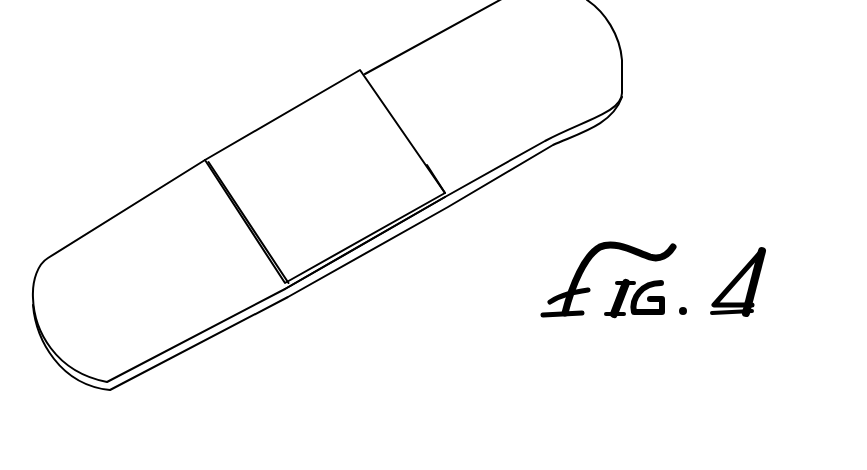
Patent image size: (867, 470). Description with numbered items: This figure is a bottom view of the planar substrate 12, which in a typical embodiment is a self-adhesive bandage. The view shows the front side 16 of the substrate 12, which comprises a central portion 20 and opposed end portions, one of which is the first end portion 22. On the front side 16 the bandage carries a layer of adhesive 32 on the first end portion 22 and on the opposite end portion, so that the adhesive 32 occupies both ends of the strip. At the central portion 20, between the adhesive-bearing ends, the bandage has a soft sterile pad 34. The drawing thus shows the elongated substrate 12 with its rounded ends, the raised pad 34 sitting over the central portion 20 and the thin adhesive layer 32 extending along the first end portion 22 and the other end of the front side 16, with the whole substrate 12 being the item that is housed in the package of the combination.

The substrate 12 is at (248, 92).
The front side 16 is at (438, 188).
The central portion 20 is at (356, 249).
The first end portion 22 is at (555, 135).
The layer of adhesive 32 is at (157, 297).
The soft sterile pad 34 is at (342, 177).